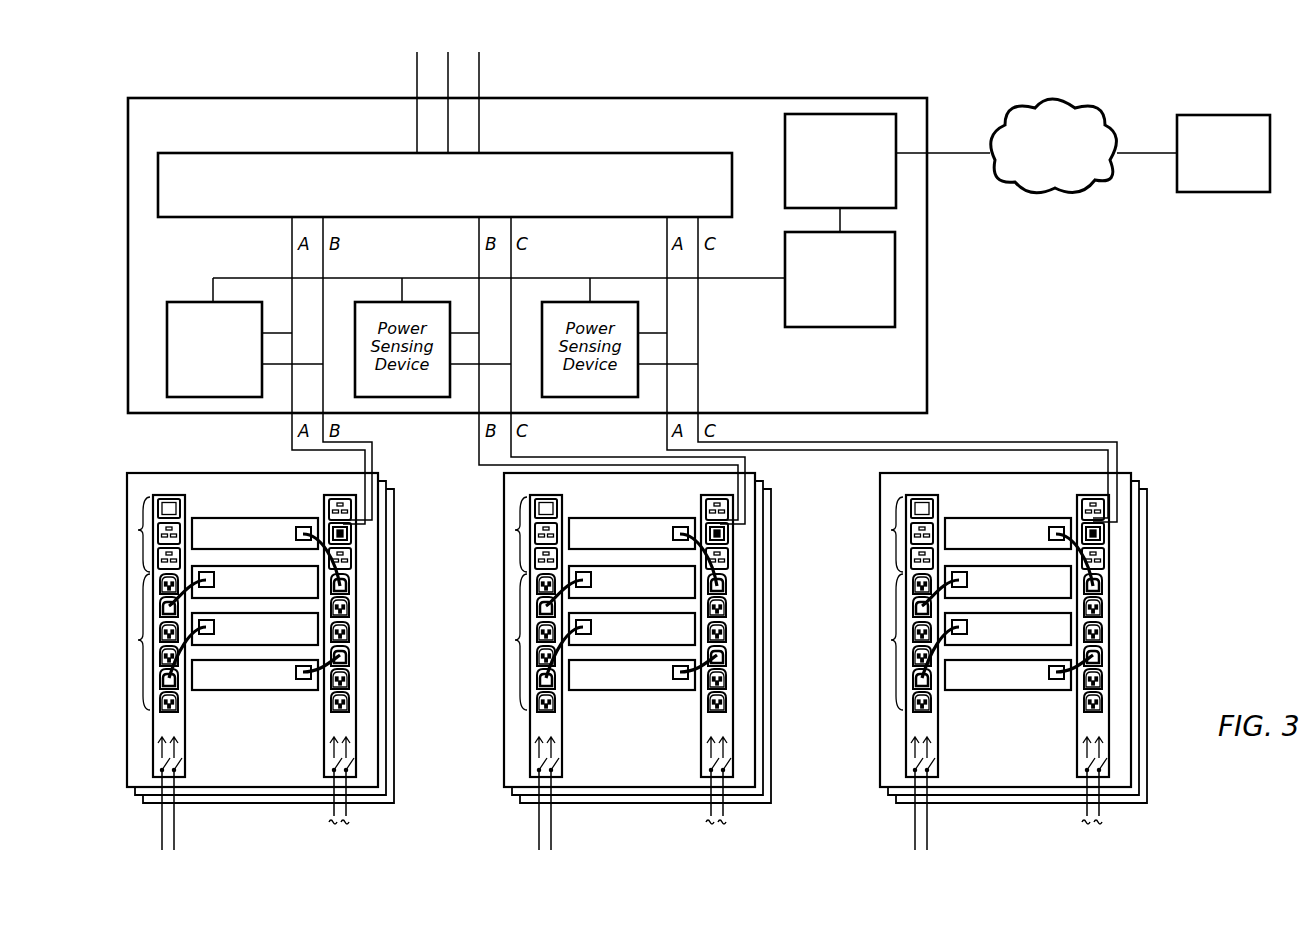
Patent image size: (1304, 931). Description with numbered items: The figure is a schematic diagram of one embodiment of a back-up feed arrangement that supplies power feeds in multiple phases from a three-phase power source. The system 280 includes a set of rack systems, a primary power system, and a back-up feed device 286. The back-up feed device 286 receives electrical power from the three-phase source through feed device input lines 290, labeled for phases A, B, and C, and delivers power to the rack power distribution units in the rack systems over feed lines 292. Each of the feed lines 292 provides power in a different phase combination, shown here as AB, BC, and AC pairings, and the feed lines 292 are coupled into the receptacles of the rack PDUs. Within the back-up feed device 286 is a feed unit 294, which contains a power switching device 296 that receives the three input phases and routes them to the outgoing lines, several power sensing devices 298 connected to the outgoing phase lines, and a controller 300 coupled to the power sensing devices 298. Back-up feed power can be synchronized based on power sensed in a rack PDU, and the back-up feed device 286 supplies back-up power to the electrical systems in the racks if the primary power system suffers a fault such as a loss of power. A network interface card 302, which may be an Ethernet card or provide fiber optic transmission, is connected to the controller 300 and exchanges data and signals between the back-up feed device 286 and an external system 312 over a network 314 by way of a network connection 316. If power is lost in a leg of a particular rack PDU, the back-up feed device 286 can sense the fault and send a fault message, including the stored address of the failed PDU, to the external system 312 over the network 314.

The system 280 is at (178, 74).
The back-up feed device 286 is at (908, 60).
The feed device input lines 290 is at (504, 86).
The feed lines 292 is at (732, 430).
The feed unit 294 is at (808, 391).
The power switching device 296 is at (430, 203).
The power sensing devices 298 is at (200, 384).
The controller 300 is at (826, 297).
The network interface card 302 is at (826, 194).
The external system 312 is at (1209, 179).
The network 314 is at (1039, 173).
The network connection 316 is at (958, 153).